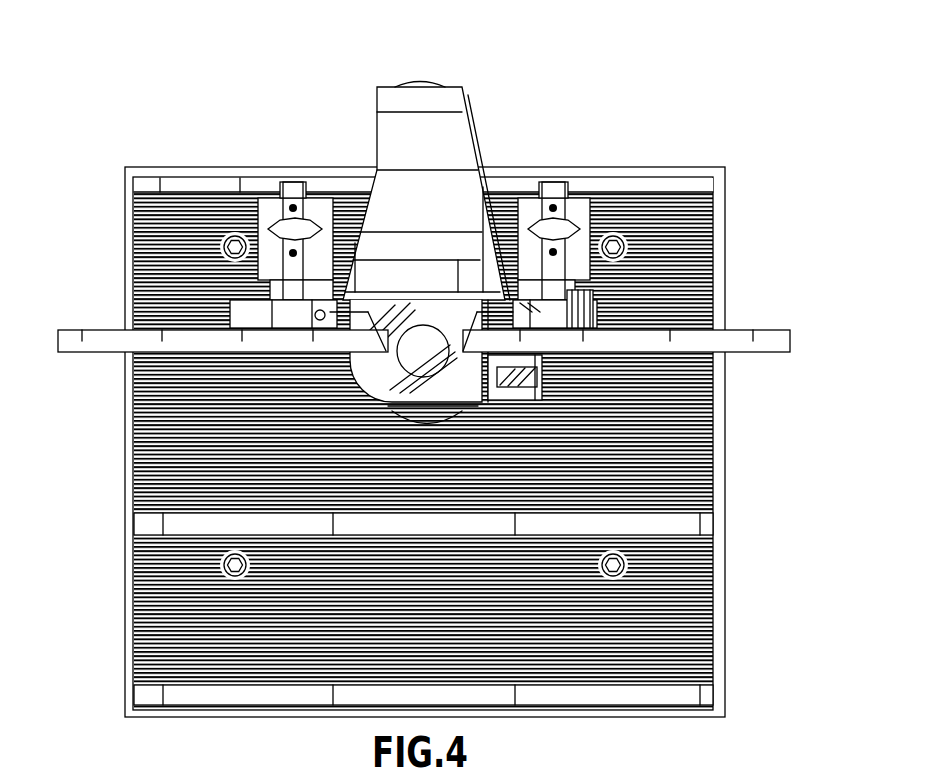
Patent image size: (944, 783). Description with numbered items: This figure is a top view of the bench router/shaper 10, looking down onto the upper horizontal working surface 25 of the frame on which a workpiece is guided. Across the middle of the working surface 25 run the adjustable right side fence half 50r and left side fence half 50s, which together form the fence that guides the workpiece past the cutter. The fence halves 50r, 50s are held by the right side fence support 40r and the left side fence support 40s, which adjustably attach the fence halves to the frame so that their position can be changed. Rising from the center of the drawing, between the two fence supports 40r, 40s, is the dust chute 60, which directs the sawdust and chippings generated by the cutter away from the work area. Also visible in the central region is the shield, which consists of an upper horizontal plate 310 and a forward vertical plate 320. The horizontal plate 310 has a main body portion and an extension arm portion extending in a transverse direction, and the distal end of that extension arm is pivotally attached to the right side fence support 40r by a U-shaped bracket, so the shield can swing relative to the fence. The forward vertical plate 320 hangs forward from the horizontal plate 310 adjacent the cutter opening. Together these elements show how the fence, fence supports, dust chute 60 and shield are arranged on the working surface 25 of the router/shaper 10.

The router/shaper 10 is at (190, 110).
The upper horizontal working surface 25 is at (152, 425).
The left side fence support 40s is at (243, 316).
The right side fence support 40r is at (612, 315).
The left side fence half 50s is at (110, 337).
The right side fence half 50r is at (773, 337).
The dust chute 60 is at (447, 200).
The upper horizontal plate 310 is at (396, 300).
The forward vertical plate 320 is at (503, 398).